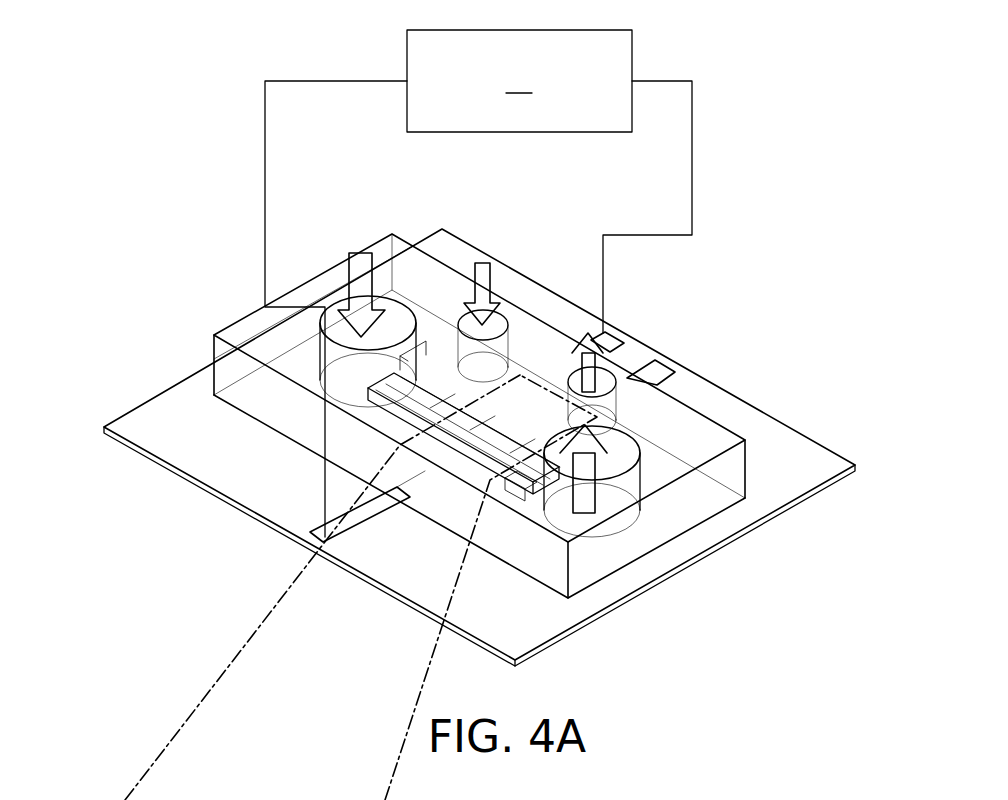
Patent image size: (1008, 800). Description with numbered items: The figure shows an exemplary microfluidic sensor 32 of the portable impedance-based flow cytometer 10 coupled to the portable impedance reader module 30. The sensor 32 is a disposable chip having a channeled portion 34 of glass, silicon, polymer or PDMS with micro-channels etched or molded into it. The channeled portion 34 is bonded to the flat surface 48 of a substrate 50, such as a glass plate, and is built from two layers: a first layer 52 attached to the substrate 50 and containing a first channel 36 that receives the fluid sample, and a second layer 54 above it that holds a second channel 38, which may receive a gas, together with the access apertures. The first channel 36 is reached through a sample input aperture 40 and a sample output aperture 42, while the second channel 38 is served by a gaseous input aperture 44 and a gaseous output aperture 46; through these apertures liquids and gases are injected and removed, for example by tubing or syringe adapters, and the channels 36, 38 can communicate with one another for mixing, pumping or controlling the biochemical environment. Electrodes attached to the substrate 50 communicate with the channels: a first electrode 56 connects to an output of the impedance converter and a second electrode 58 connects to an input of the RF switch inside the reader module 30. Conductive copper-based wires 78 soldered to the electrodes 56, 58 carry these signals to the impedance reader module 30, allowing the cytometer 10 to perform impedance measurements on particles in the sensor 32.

The portable impedance-based flow cytometer 10 is at (122, 184).
The portable impedance reader module 30 is at (519, 81).
The microfluidic sensor 32 is at (782, 328).
The channeled portion 34 is at (723, 443).
The first channel 36 is at (525, 492).
The second channel 38 is at (520, 368).
The sample input aperture 40 is at (342, 330).
The sample output aperture 42 is at (643, 432).
The gaseous input aperture 44 is at (470, 318).
The gaseous output aperture 46 is at (625, 377).
The flat surface 48 is at (180, 455).
The substrate 50 is at (858, 466).
The first layer 52 is at (214, 380).
The second layer 54 is at (214, 352).
The first electrode 56 is at (600, 345).
The second electrode 58 is at (380, 514).
The conductive wires 78 is at (265, 168).